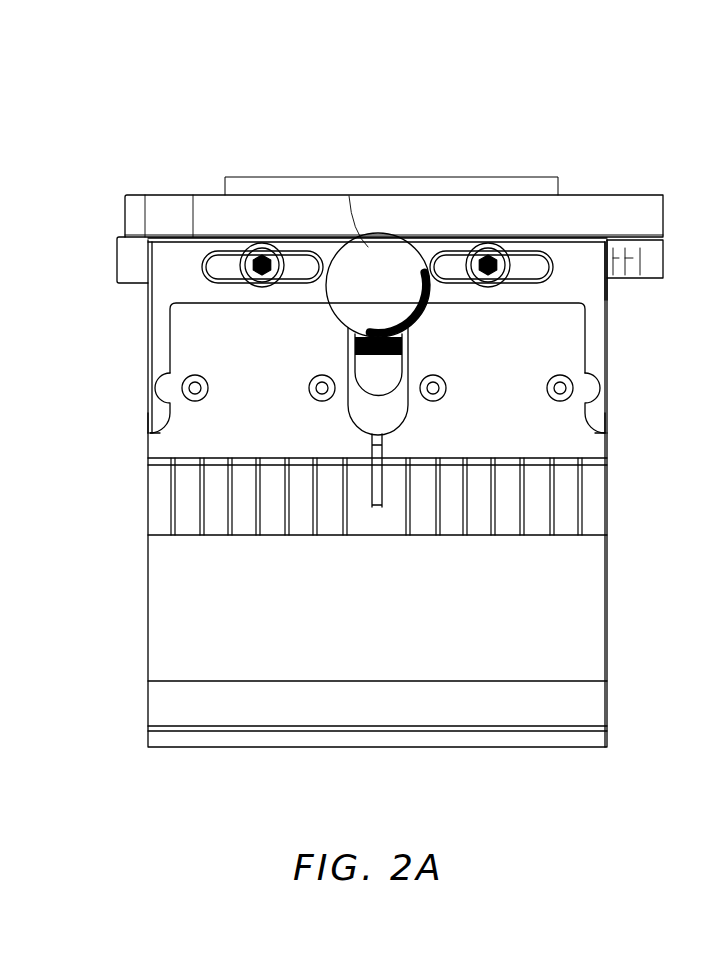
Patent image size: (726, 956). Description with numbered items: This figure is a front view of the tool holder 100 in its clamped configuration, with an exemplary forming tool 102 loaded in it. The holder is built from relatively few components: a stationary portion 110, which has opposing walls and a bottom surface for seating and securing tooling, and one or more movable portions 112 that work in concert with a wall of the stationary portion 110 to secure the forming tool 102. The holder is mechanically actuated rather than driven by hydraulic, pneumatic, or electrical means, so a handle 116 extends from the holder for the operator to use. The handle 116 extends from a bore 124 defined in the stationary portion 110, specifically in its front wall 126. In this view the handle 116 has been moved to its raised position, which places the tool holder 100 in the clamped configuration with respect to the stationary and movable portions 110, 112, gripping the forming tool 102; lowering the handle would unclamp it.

The tool holder 100 is at (445, 138).
The forming tool 102 is at (605, 622).
The stationary portion 110 is at (614, 354).
The movable portion 112 is at (150, 447).
The handle 116 is at (368, 237).
The bore 124 is at (360, 368).
The front wall 126 is at (603, 293).